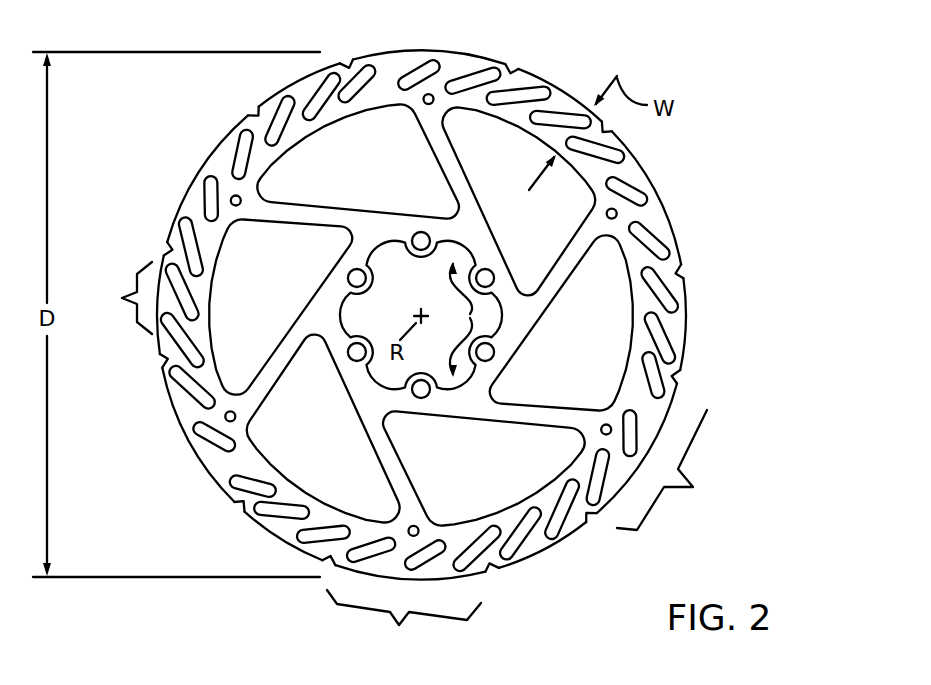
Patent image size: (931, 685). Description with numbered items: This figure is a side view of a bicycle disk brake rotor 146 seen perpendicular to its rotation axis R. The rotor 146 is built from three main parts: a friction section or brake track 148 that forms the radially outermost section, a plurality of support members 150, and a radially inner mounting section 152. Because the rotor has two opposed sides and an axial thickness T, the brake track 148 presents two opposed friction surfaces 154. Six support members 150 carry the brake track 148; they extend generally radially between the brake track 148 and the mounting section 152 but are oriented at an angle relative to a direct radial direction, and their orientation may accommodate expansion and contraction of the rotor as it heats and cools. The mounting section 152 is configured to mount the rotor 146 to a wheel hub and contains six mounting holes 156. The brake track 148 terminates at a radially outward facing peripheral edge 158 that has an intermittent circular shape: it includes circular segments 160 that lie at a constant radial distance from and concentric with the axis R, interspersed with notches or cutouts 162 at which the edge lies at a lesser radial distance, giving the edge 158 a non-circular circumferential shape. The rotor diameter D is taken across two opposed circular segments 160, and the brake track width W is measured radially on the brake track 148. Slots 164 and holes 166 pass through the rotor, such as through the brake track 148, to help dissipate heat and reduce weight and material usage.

The brake rotor 146 is at (684, 158).
The brake track 148 is at (554, 105).
The support members 150 is at (556, 287).
The mounting section 152 is at (447, 325).
The friction surfaces 154 is at (404, 72).
The mounting holes 156 is at (419, 230).
The peripheral edge 158 is at (674, 224).
The circular segments 160 is at (402, 461).
The cutouts 162 is at (350, 62).
The slots 164 is at (448, 89).
The holes 166 is at (428, 138).